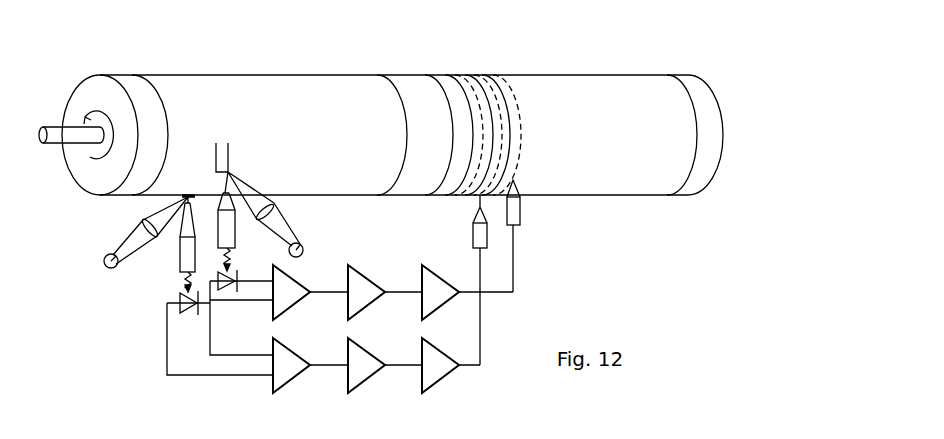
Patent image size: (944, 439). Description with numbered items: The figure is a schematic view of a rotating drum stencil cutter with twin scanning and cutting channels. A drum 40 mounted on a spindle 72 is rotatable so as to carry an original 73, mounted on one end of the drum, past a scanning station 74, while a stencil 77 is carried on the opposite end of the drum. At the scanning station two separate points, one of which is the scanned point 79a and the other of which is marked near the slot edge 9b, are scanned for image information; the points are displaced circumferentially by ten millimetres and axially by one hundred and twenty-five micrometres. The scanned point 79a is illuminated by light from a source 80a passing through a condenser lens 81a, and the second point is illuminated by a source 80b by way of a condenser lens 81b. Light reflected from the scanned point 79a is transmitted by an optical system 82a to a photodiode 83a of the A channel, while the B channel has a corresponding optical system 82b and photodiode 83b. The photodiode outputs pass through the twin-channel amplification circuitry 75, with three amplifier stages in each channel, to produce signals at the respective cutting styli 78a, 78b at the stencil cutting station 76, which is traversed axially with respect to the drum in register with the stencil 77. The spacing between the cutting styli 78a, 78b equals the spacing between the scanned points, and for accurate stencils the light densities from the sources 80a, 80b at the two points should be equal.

The drum 40 is at (98, 91).
The spindle 72 is at (58, 126).
The original 73 is at (195, 86).
The scanning station 74 is at (222, 142).
The twin-channel amplification circuitry 75 is at (375, 390).
The stencil cutting station 76 is at (507, 142).
The stencil 77 is at (653, 86).
The cutting stylus 78a is at (487, 237).
The cutting stylus 78b is at (522, 220).
The scanned point 79a is at (190, 194).
The slot edge point 9b is at (233, 172).
The light source 80a is at (103, 262).
The light source 80b is at (303, 250).
The condenser lens 81a is at (142, 223).
The condenser lens 81b is at (278, 207).
The optical system 82a is at (178, 265).
The optical system 82b is at (236, 232).
The photodiode 83a is at (182, 313).
The photodiode 83b is at (228, 277).